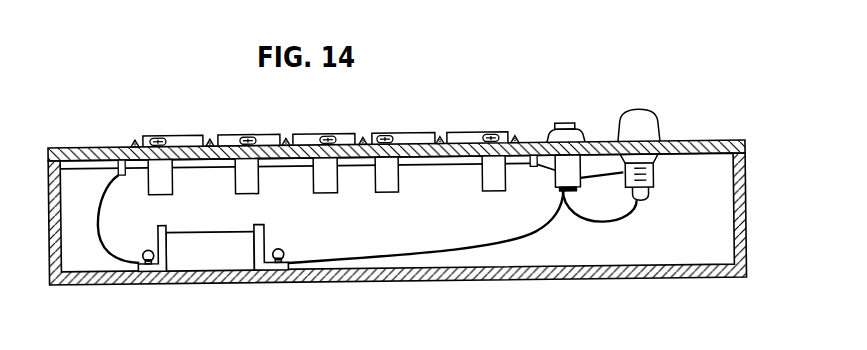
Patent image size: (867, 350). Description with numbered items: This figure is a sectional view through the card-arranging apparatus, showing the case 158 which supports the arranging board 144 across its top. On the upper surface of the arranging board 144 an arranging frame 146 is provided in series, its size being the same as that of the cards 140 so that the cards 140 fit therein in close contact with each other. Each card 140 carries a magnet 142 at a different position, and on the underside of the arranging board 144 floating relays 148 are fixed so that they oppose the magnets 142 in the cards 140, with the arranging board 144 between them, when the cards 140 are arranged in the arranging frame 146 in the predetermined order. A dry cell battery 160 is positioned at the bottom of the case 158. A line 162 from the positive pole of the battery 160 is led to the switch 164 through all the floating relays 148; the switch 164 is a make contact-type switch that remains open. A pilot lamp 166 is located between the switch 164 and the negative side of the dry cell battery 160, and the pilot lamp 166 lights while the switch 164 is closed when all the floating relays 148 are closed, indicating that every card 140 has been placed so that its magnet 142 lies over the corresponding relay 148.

The card 140 is at (472, 132).
The magnet 142 is at (157, 137).
The arranging board 144 is at (707, 140).
The arranging frame 146 is at (134, 143).
The floating relay 148 is at (241, 138).
The case 158 is at (567, 280).
The dry cell battery 160 is at (213, 253).
The line 162 is at (297, 147).
The switch 164 is at (568, 122).
The pilot lamp 166 is at (653, 112).